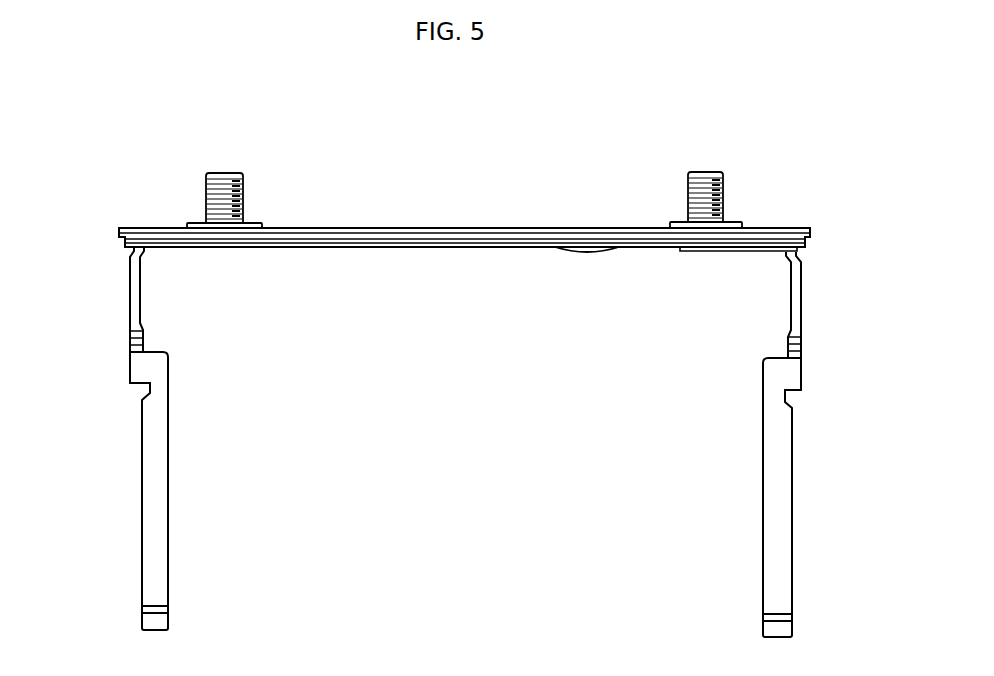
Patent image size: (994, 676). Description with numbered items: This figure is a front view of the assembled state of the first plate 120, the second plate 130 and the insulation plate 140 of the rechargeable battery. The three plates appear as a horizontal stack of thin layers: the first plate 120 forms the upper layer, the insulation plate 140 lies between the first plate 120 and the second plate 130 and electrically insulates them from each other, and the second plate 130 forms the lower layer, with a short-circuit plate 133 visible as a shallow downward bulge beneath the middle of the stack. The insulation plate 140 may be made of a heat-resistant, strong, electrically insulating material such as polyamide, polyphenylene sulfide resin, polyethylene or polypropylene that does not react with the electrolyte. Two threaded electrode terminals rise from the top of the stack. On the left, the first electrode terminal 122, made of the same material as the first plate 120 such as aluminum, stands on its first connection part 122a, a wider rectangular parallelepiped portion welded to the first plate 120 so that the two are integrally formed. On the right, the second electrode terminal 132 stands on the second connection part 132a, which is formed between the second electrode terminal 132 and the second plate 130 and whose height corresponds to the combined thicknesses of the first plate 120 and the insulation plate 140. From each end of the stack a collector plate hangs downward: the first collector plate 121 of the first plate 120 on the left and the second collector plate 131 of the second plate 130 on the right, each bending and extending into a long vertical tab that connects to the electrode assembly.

The first plate 120 is at (371, 229).
The first collector plate 121 is at (152, 367).
The first electrode terminal 122 is at (226, 178).
The first connection part 122a is at (254, 222).
The second plate 130 is at (531, 229).
The second collector plate 131 is at (780, 371).
The second electrode terminal 132 is at (703, 178).
The second connection part 132a is at (733, 222).
The short-circuit plate 133 is at (587, 249).
The insulation plate 140 is at (434, 229).